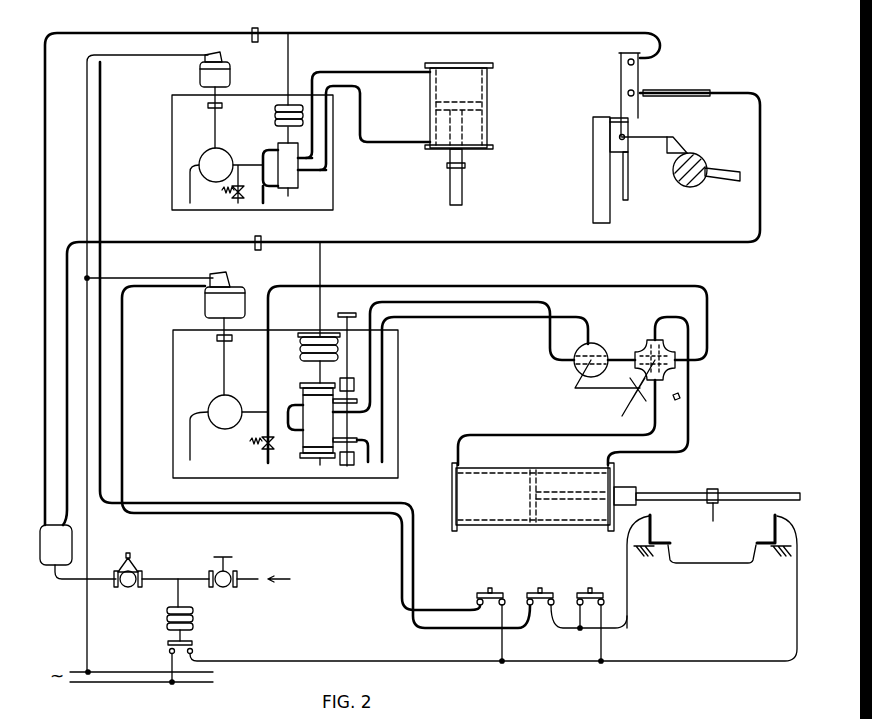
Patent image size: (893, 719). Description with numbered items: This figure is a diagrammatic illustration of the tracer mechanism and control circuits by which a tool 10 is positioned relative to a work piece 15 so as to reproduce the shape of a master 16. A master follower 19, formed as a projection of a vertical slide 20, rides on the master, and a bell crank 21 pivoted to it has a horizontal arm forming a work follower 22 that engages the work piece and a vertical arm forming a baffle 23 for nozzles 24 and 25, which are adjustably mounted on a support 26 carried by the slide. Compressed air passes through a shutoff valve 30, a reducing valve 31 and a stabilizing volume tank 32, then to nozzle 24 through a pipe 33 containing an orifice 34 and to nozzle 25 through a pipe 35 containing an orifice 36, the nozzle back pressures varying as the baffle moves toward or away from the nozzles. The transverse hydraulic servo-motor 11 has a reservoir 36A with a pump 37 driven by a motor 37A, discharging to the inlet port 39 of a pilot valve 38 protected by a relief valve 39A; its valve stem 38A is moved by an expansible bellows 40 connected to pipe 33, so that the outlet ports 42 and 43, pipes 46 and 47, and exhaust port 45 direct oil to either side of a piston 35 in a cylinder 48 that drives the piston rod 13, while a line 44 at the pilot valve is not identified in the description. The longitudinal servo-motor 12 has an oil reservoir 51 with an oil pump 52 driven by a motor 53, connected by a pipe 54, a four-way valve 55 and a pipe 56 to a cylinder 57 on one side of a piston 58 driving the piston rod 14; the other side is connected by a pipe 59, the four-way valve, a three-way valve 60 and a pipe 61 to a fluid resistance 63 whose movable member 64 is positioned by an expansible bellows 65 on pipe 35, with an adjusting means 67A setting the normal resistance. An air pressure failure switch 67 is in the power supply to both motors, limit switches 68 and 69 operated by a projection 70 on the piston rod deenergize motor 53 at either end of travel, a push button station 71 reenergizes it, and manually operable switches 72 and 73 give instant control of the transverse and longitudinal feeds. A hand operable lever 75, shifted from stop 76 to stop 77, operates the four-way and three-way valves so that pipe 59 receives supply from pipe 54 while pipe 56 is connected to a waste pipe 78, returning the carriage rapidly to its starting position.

The tool 10 is at (718, 172).
The hydraulic servo-motor 11 is at (150, 143).
The hydraulic servo-motor 12 is at (428, 418).
The piston rod 13 is at (465, 190).
The piston rod 14 is at (670, 493).
The work piece 15 is at (700, 158).
The master 16 is at (630, 188).
The master follower 19 is at (618, 152).
The vertical slide 20 is at (593, 166).
The bell crank 21 is at (638, 140).
The work follower 22 is at (670, 154).
The baffle 23 is at (620, 72).
The nozzle 24 is at (622, 60).
The nozzle 25 is at (621, 95).
The support 26 is at (641, 76).
The shutoff valve 30 is at (230, 590).
The reducing valve 31 is at (133, 590).
The stabilizing volume tank 32 is at (50, 566).
The pipe 33 is at (46, 108).
The orifice 34 is at (255, 44).
The pipe 35 is at (150, 242).
The orifice 36 is at (262, 252).
The reservoir 36A is at (172, 170).
The pump 37 is at (210, 150).
The motor 37A is at (200, 74).
The pilot valve 38 is at (300, 186).
The valve stem 38A is at (286, 135).
The inlet port 39 is at (270, 168).
The relief valve 39A is at (222, 192).
The expansible bellows 40 is at (296, 104).
The outlet port 42 is at (303, 162).
The outlet port 43 is at (300, 176).
The loop line 44 is at (266, 150).
The exhaust port 45 is at (278, 188).
The pipe 46 is at (380, 73).
The pipe 47 is at (386, 146).
The cylinder 48 is at (490, 97).
The oil reservoir 51 is at (173, 422).
The oil pump 52 is at (213, 392).
The motor 53 is at (204, 302).
The pipe 54 is at (380, 287).
The four-way valve 55 is at (648, 345).
The pipe 56 is at (488, 433).
The cylinder 57 is at (571, 468).
The piston 58 is at (530, 496).
The pipe 59 is at (692, 432).
The three-way valve 60 is at (597, 345).
The pipe 61 is at (522, 302).
The fluid resistance 63 is at (303, 404).
The movable member 64 is at (317, 376).
The expansible bellows 65 is at (308, 336).
The air pressure failure switch 67 is at (232, 650).
The adjusting means 67A is at (338, 315).
The limit switch 68 is at (656, 535).
The limit switch 69 is at (774, 526).
The projection 70 is at (714, 522).
The push button station 71 is at (600, 592).
The manually operable switch 72 is at (497, 592).
The manually operable switch 73 is at (553, 592).
The hand operable lever 75 is at (625, 413).
The stop 76 is at (628, 392).
The stop 77 is at (682, 397).
The waste pipe 78 is at (530, 318).